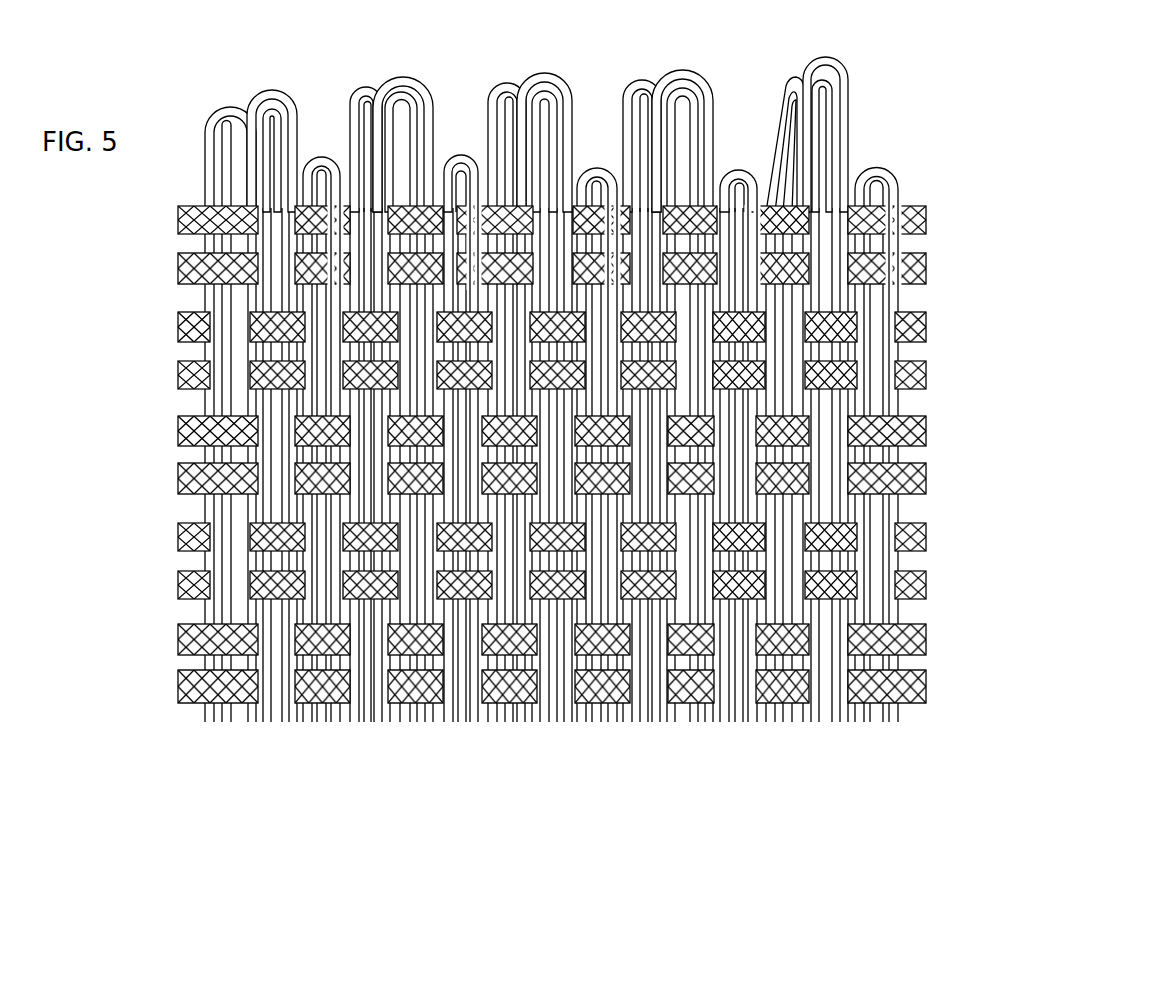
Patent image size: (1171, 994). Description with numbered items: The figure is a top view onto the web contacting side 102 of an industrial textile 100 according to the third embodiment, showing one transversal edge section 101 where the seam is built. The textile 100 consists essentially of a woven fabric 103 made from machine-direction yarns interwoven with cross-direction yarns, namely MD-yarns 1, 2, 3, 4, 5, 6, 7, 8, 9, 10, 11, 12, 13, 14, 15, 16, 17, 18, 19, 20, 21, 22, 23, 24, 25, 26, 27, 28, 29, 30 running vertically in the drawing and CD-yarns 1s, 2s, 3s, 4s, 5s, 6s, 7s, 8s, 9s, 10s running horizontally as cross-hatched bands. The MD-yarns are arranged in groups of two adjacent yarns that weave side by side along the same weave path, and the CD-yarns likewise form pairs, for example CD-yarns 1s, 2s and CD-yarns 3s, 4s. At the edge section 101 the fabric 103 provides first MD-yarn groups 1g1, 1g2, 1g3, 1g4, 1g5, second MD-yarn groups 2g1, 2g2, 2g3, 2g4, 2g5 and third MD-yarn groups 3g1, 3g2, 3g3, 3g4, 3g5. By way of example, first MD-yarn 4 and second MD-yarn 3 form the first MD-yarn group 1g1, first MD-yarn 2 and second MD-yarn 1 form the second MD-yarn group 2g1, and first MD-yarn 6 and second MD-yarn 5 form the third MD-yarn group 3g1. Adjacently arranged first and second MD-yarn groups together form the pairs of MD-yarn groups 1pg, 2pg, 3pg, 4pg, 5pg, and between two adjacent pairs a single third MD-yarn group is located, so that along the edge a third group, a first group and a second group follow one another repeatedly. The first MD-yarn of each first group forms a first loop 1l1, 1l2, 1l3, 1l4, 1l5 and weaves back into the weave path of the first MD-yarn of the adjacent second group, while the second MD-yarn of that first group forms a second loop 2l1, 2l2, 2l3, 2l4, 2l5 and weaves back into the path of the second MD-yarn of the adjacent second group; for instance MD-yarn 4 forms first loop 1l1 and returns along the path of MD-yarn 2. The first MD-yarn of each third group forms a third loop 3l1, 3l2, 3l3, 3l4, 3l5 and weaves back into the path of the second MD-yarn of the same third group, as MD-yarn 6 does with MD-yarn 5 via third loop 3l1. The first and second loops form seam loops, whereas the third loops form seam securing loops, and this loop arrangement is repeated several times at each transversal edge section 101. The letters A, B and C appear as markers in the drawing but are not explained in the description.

The woven pile fabric 100 is at (1053, 104).
The pile layer 101 is at (906, 197).
The ground weave 102 is at (951, 402).
The back side 103 is at (968, 496).
The first weft 1s is at (178, 683).
The second weft 2s is at (180, 635).
The third weft 3s is at (180, 588).
The fourth weft 4s is at (180, 538).
The fifth weft 5s is at (178, 482).
The sixth weft 6s is at (178, 428).
The seventh weft 7s is at (180, 373).
The eighth weft 8s is at (178, 327).
The ninth weft 9s is at (180, 268).
The tenth weft 10s is at (178, 222).
The warp thread 1 is at (209, 724).
The warp thread 2 is at (226, 724).
The warp thread 3 is at (258, 724).
The warp thread 4 is at (285, 724).
The warp thread 5 is at (308, 724).
The warp thread 6 is at (333, 724).
The warp thread 7 is at (354, 724).
The warp thread 8 is at (366, 724).
The warp thread 9 is at (388, 724).
The warp thread 10 is at (422, 724).
The warp thread 11 is at (452, 724).
The warp thread 12 is at (478, 724).
The warp thread 13 is at (492, 724).
The warp thread 14 is at (509, 724).
The warp thread 15 is at (530, 724).
The warp thread 16 is at (560, 724).
The warp thread 17 is at (582, 724).
The warp thread 18 is at (609, 724).
The warp thread 19 is at (627, 724).
The warp thread 20 is at (644, 724).
The warp thread 21 is at (664, 724).
The warp thread 22 is at (701, 724).
The warp thread 23 is at (725, 724).
The warp thread 24 is at (750, 724).
The warp thread 25 is at (774, 724).
The warp thread 26 is at (791, 724).
The warp thread 27 is at (811, 724).
The warp thread 28 is at (840, 724).
The warp thread 29 is at (862, 724).
The warp thread 30 is at (890, 724).
The first pile loop of group 1 1l1 is at (262, 93).
The second pile loop of group 1 2l1 is at (232, 107).
The third loop of group 1 3l1 is at (318, 155).
The first pile loop of group 2 1l2 is at (405, 78).
The second pile loop of group 2 2l2 is at (362, 88).
The third loop of group 2 3l2 is at (452, 156).
The first pile loop of group 3 1l3 is at (548, 74).
The second pile loop of group 3 2l3 is at (505, 86).
The third loop of group 3 3l3 is at (598, 168).
The first pile loop of group 4 1l4 is at (697, 74).
The second pile loop of group 4 2l4 is at (645, 82).
The third loop of group 4 3l4 is at (740, 170).
The first pile loop of group 5 1l5 is at (825, 134).
The second pile loop of group 5 2l5 is at (785, 144).
The third loop of group 5 3l5 is at (880, 165).
The first warp pair of group 1 1g1 is at (272, 424).
The second warp pair of group 1 2g1 is at (225, 432).
The third warp pair of group 1 3g1 is at (320, 450).
The first warp pair of group 2 1g2 is at (413, 424).
The second warp pair of group 2 2g2 is at (365, 419).
The third warp pair of group 2 3g2 is at (463, 461).
The first warp pair of group 3 1g3 is at (548, 426).
The second warp pair of group 3 2g3 is at (501, 433).
The third warp pair of group 3 3g3 is at (603, 464).
The first warp pair of group 4 1g4 is at (700, 427).
The second warp pair of group 4 2g4 is at (646, 425).
The third warp pair of group 4 3g4 is at (735, 466).
The first warp pair of group 5 1g5 is at (828, 433).
The second warp pair of group 5 2g5 is at (782, 443).
The third warp pair of group 5 3g5 is at (892, 464).
The first pile group 1pg is at (268, 450).
The second pile group 2pg is at (416, 448).
The third pile group 3pg is at (551, 450).
The fourth pile group 4pg is at (691, 453).
The fifth pile group 5pg is at (845, 465).
The warp position A is at (228, 400).
The warp position B is at (245, 390).
The weft position C is at (292, 345).